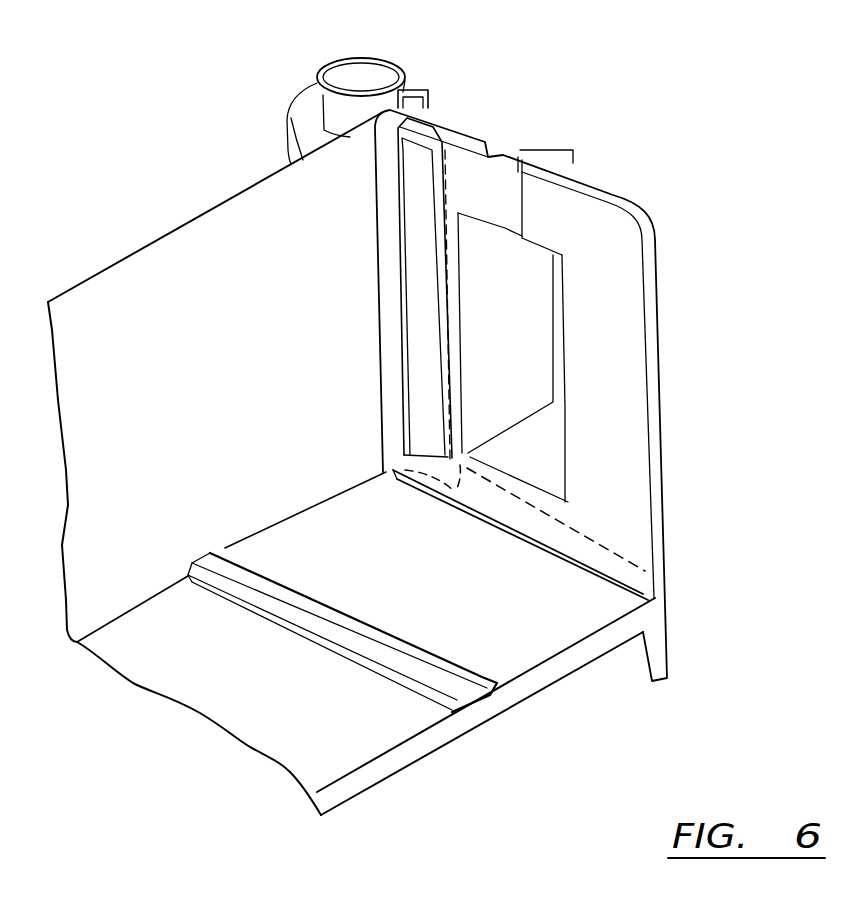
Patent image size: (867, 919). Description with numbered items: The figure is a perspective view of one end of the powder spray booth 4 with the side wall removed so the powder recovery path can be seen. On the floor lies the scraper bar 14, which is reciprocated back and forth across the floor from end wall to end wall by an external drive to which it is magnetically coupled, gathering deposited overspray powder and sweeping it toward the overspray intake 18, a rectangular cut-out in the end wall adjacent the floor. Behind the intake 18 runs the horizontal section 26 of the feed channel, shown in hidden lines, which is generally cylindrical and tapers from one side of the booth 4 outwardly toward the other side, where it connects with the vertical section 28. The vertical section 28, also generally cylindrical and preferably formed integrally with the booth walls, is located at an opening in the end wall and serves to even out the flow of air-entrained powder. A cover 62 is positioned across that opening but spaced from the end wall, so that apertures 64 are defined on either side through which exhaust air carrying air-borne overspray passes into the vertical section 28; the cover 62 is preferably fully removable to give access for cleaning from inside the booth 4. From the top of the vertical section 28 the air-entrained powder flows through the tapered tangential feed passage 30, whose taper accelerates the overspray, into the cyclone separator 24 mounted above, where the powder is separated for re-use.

The booth 4 is at (103, 307).
The cyclone separator 24 is at (305, 120).
The tapered tangential feed passage 30 is at (410, 82).
The vertical section 28 is at (423, 127).
The aperture 64 is at (438, 173).
The cover 62 is at (420, 297).
The horizontal section 26 is at (577, 523).
The overspray intake 18 is at (593, 567).
The scraper bar 14 is at (483, 677).